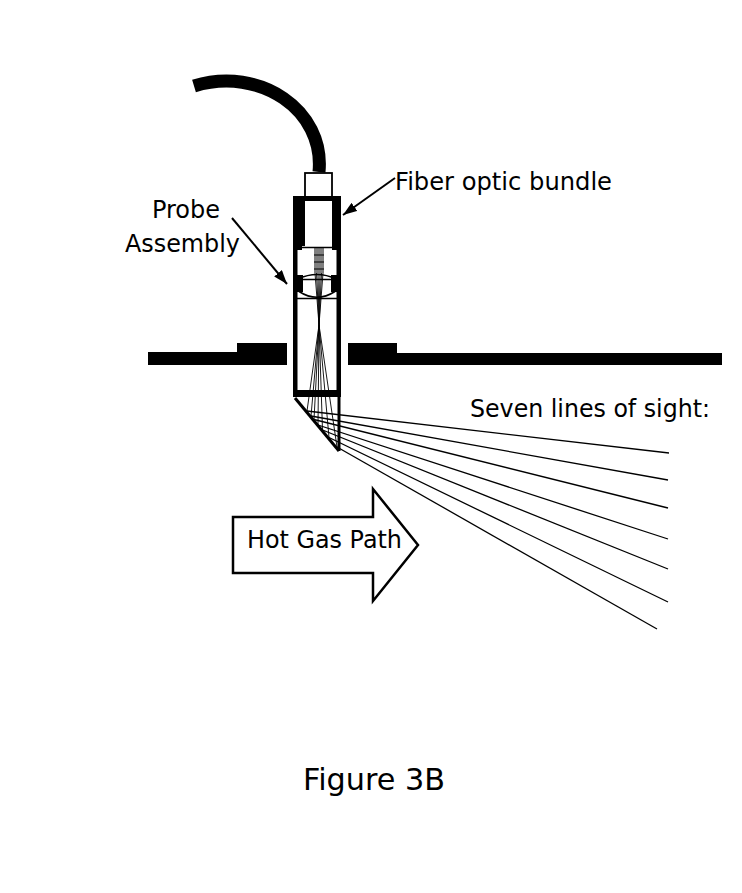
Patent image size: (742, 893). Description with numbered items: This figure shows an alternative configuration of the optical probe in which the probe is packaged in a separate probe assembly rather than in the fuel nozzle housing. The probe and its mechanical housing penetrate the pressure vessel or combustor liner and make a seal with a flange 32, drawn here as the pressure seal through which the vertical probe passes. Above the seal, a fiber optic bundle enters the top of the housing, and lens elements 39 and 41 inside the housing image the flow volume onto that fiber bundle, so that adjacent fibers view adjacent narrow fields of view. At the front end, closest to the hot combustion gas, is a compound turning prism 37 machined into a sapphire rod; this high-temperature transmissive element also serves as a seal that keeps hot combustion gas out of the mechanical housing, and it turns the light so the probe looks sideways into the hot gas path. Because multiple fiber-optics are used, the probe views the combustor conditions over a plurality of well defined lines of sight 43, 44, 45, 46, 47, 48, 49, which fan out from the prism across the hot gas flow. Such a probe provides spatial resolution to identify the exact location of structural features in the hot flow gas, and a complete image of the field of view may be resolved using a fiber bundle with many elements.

The flange 32 is at (414, 340).
The compound turning prism 37 is at (290, 381).
The lens element 39 is at (344, 268).
The lens element 41 is at (344, 296).
The line of sight 43 is at (488, 432).
The line of sight 44 is at (489, 448).
The line of sight 45 is at (491, 464).
The line of sight 46 is at (493, 482).
The line of sight 47 is at (496, 499).
The line of sight 48 is at (498, 520).
The line of sight 49 is at (497, 538).